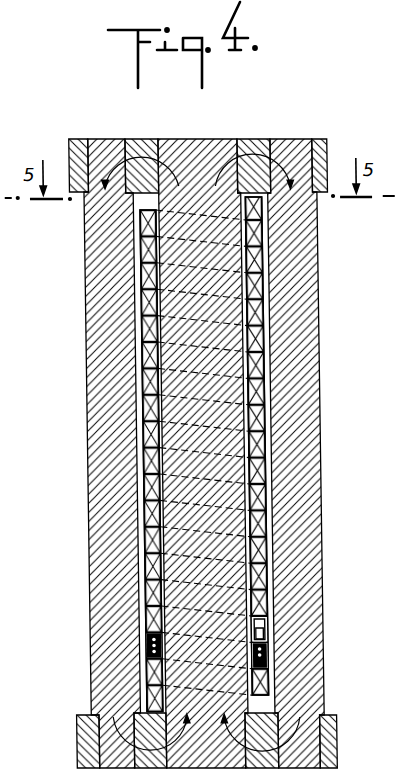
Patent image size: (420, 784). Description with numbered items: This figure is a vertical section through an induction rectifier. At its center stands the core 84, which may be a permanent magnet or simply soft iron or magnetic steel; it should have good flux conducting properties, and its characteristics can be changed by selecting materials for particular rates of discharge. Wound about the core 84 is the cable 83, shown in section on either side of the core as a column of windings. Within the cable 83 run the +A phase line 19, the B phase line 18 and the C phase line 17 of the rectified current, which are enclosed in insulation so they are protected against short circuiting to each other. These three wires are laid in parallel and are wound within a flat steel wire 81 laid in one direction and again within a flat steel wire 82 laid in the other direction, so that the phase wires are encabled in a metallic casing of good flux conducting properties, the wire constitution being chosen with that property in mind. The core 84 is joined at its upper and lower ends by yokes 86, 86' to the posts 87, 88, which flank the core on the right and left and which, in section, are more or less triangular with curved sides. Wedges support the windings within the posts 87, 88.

The core 84 is at (210, 148).
The yoke 86 is at (246, 147).
The yoke 86' is at (227, 740).
The cable 83 is at (260, 214).
The post 87 is at (302, 281).
The post 88 is at (93, 364).
The flat steel wire 82 is at (256, 623).
The flat steel wire 81 is at (256, 636).
The +A phase line 19 is at (256, 650).
The B phase line 18 is at (256, 656).
The C phase line 17 is at (256, 663).